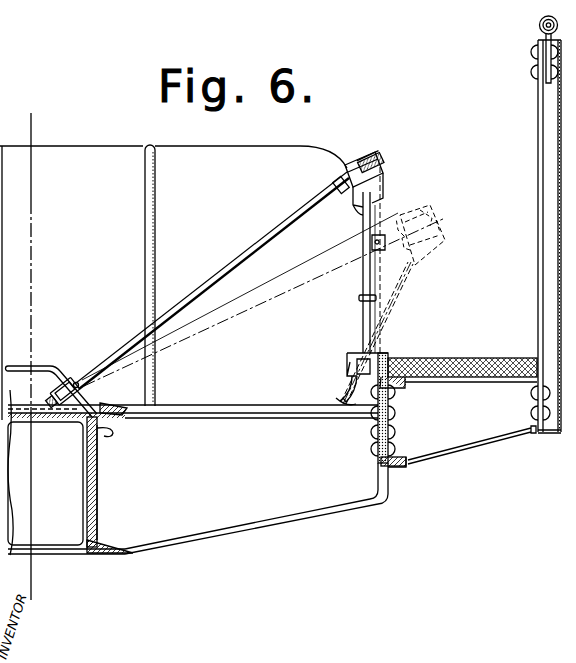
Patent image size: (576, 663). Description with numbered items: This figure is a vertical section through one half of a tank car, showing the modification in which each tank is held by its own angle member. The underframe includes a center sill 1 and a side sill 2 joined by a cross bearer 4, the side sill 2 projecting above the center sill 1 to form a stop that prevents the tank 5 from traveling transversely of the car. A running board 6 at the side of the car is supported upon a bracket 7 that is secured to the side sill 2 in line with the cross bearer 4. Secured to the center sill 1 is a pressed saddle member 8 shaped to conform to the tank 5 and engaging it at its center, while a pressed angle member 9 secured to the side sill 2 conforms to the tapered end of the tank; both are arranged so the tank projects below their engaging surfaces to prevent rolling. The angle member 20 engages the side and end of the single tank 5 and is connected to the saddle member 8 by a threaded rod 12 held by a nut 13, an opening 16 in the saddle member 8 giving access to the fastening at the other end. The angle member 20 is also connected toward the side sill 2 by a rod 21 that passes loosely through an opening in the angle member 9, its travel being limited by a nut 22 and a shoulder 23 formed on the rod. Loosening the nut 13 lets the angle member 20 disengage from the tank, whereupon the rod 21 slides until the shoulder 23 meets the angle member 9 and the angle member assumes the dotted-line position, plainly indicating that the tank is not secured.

The center sills 1 is at (98, 548).
The side sills 2 is at (388, 424).
The cross bearers 4 is at (252, 502).
The tank 5 is at (189, 281).
The running boards 6 is at (478, 358).
The brackets 7 is at (472, 432).
The pressed saddle members 8 is at (58, 378).
The pressed angle members 9 is at (352, 370).
The threaded rod 12 is at (242, 258).
The nut 13 is at (357, 173).
The openings 16 is at (25, 366).
The angle member 20 is at (370, 190).
The rod 21 is at (364, 318).
The nut 22 is at (347, 362).
The shoulder 23 is at (358, 300).